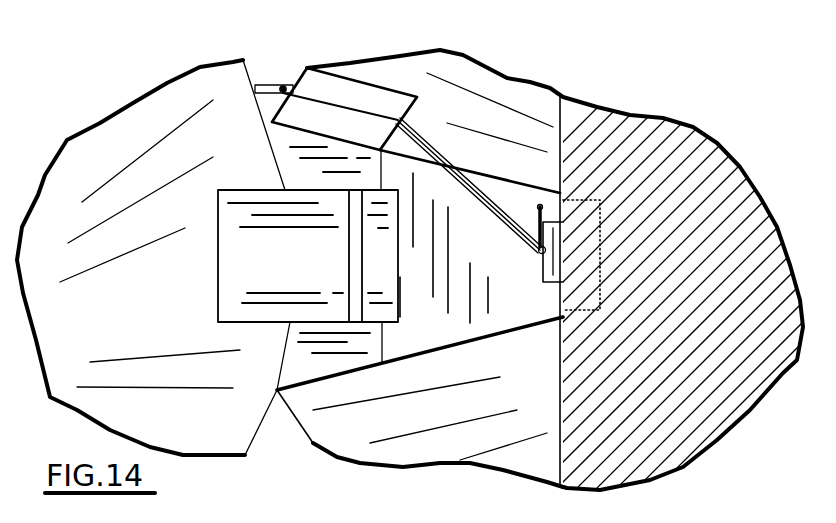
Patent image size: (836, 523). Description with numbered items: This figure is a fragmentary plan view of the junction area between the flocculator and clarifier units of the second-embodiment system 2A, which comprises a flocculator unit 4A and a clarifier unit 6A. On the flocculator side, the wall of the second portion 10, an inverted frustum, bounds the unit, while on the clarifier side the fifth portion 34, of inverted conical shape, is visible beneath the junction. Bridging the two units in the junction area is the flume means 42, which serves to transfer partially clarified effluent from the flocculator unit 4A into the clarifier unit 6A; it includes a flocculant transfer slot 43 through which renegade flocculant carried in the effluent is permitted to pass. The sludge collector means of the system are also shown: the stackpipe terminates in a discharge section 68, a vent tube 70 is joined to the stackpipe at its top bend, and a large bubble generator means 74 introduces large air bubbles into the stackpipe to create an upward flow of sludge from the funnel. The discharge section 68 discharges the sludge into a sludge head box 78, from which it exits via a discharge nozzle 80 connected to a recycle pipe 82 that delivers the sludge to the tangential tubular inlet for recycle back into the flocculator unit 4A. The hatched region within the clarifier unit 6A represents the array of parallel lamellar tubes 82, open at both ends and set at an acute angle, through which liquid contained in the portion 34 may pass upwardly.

The system 2A is at (128, 106).
The flocculator unit 4A is at (86, 178).
The clarifier unit 6A is at (466, 64).
The second portion 10 is at (103, 343).
The fifth portion 34 is at (337, 430).
The flume means 42 is at (242, 258).
The flocculant transfer slot 43 is at (357, 245).
The discharge section 68 is at (462, 182).
The vent tube 70 is at (538, 217).
The large bubble generator means 74 is at (547, 267).
The sludge head box 78 is at (337, 93).
The discharge nozzle 80 is at (283, 86).
The recycle pipe 82 is at (683, 158).